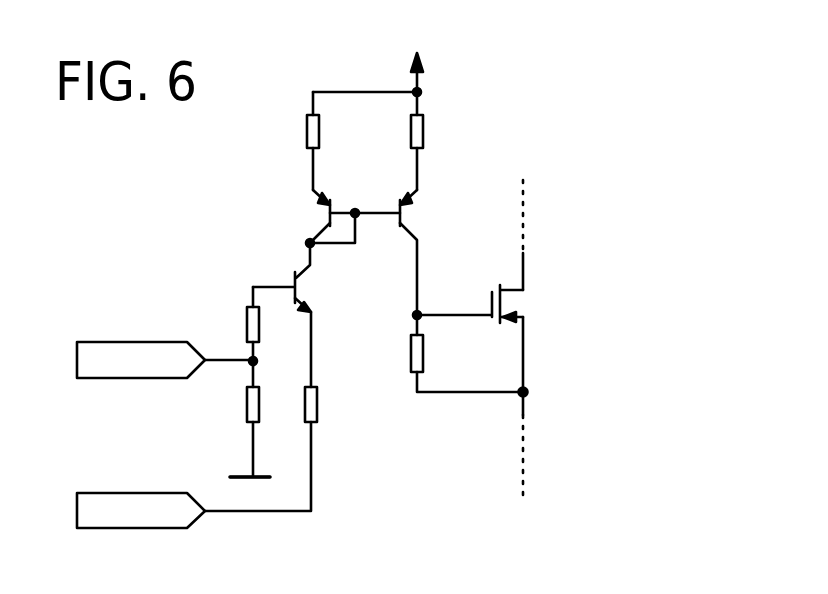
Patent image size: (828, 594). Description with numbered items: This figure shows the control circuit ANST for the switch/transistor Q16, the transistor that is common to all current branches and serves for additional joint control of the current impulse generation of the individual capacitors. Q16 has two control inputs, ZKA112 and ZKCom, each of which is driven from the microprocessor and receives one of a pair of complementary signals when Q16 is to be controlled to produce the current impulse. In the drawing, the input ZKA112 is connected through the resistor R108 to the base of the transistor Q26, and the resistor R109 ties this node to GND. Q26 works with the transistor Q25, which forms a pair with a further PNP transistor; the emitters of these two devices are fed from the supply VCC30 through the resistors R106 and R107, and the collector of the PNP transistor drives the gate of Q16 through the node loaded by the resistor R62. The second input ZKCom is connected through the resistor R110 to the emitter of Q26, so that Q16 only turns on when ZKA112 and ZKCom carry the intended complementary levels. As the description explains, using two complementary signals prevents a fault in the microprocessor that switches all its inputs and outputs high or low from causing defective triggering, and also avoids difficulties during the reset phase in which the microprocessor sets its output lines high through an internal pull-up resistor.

The supply voltage VCC30 is at (395, 57).
The resistor R106 4.7K R106 is at (278, 141).
The resistor R107 1K R107 is at (453, 141).
The transistor Q25 BCV62 Q25 is at (326, 212).
The PNP transistor PNP is at (404, 213).
The transistor Q26 BCB47 Q26 is at (324, 315).
The resistor R108 1k R108 is at (247, 325).
The control input ZKA112 is at (160, 341).
The resistor R109 10k R109 is at (231, 429).
The ground GND is at (250, 495).
The resistor R110 15K R110 is at (290, 446).
The control input ZKCom is at (136, 492).
The resistor R62 15K R62 is at (469, 363).
The switch/transistor Q16 is at (522, 341).